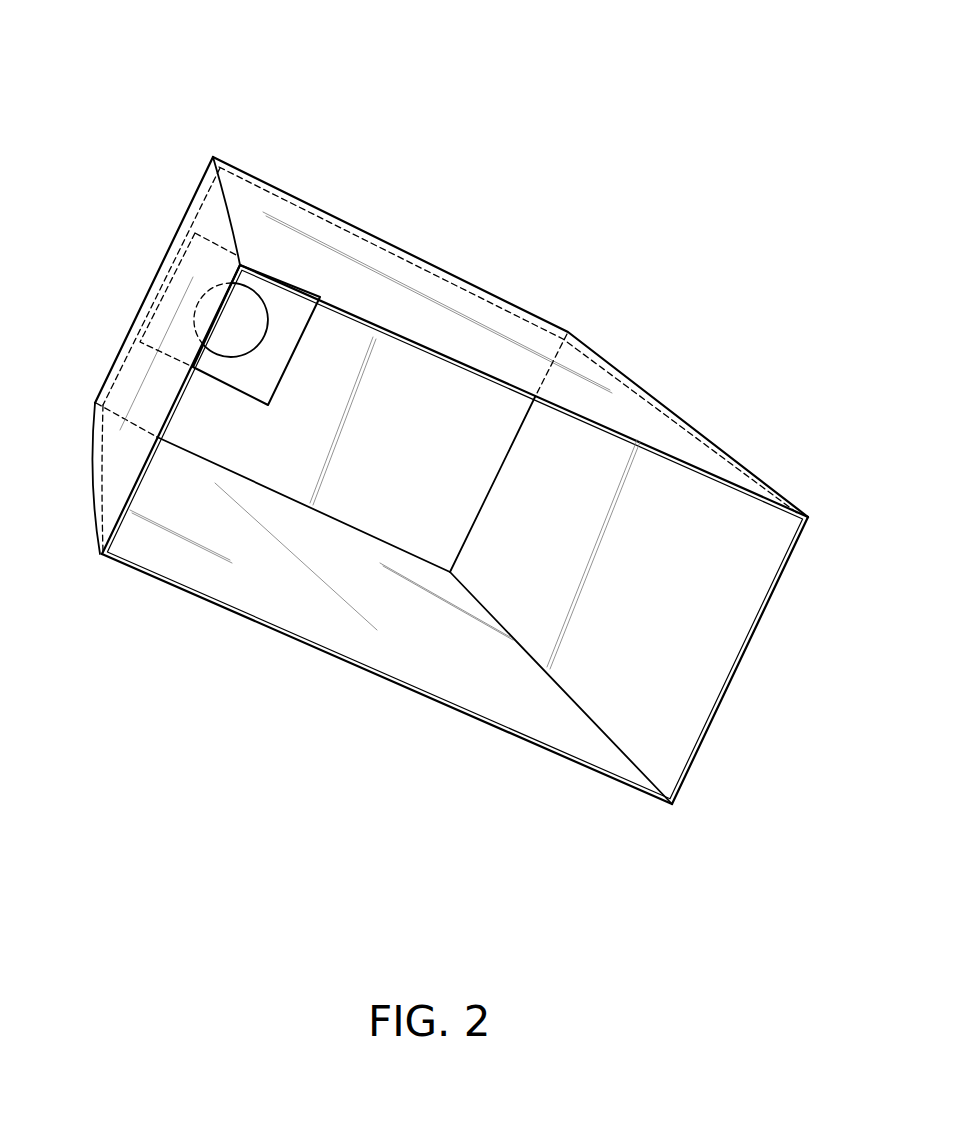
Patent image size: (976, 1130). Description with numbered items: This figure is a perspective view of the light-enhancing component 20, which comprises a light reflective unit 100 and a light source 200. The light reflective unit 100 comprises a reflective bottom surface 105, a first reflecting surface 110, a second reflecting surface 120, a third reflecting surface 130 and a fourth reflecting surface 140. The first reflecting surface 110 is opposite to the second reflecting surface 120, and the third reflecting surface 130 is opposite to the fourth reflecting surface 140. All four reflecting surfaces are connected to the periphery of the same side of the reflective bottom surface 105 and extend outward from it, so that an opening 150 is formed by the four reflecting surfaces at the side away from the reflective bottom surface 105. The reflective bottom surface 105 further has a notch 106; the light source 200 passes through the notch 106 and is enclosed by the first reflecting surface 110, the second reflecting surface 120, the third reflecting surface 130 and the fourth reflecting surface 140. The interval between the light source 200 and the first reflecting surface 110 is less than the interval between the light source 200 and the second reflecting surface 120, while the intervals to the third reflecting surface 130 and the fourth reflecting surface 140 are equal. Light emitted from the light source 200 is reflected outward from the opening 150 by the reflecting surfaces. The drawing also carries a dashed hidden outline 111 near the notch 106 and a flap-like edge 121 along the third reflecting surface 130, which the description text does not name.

The light-enhancing component 20 is at (112, 37).
The light reflective unit 100 is at (635, 240).
The reflective bottom surface 105 is at (384, 490).
The notch 106 is at (278, 330).
The first reflecting surface 110 is at (153, 458).
The hidden opening outline 111 is at (150, 296).
The second reflecting surface 120 is at (662, 622).
The top flap 121 is at (520, 433).
The third reflecting surface 130 is at (418, 355).
The fourth reflecting surface 140 is at (275, 568).
The opening 150 is at (472, 658).
The light source 200 is at (233, 332).